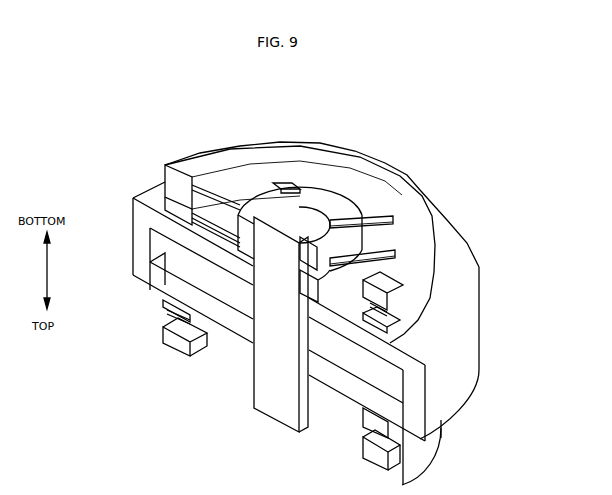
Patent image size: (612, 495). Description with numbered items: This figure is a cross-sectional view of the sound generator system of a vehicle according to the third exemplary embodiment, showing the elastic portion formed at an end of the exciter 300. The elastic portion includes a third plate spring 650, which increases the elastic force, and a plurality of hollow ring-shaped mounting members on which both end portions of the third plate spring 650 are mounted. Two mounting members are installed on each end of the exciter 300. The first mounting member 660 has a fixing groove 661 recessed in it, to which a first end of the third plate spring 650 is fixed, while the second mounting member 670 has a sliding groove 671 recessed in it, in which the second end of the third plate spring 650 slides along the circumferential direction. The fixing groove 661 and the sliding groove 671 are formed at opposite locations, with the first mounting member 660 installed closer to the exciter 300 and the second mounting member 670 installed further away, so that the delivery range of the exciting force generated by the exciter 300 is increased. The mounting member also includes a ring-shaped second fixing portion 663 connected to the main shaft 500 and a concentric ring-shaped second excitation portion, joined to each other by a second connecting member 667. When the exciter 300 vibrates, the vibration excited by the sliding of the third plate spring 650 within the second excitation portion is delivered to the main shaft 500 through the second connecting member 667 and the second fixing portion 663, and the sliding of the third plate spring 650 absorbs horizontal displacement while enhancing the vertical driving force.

The exciter 300 is at (494, 352).
The main shaft 500 is at (258, 222).
The third plate spring 650 is at (313, 218).
The first mounting member 660 is at (168, 312).
The fixing groove 661 is at (281, 185).
The second fixing portion 663 is at (372, 216).
The second connecting member 667 is at (388, 215).
The second mounting member 670 is at (197, 160).
The sliding groove 671 is at (172, 324).